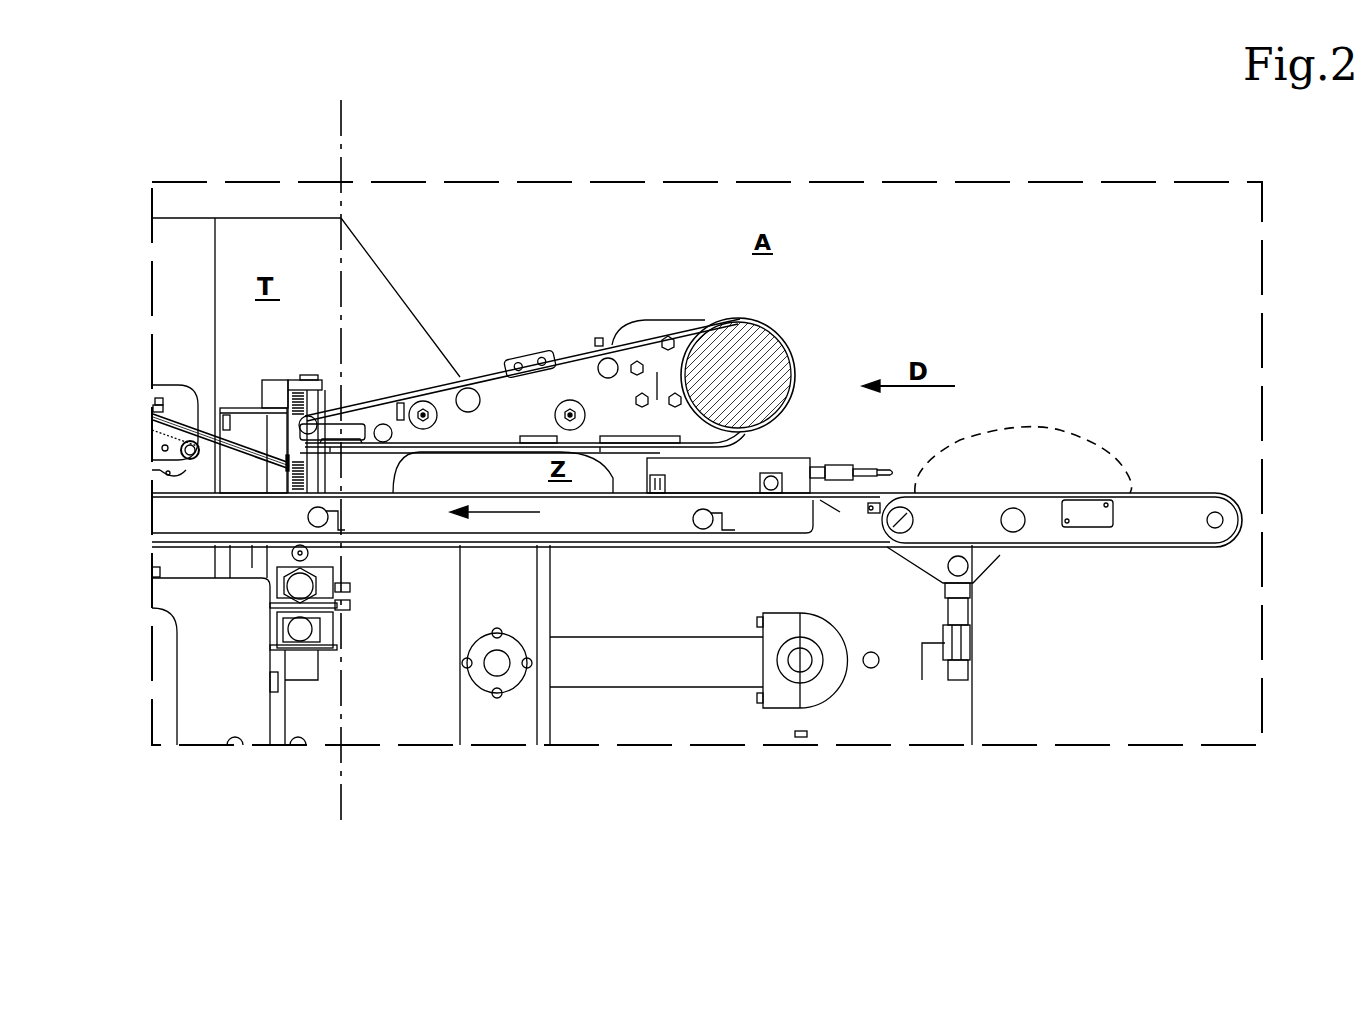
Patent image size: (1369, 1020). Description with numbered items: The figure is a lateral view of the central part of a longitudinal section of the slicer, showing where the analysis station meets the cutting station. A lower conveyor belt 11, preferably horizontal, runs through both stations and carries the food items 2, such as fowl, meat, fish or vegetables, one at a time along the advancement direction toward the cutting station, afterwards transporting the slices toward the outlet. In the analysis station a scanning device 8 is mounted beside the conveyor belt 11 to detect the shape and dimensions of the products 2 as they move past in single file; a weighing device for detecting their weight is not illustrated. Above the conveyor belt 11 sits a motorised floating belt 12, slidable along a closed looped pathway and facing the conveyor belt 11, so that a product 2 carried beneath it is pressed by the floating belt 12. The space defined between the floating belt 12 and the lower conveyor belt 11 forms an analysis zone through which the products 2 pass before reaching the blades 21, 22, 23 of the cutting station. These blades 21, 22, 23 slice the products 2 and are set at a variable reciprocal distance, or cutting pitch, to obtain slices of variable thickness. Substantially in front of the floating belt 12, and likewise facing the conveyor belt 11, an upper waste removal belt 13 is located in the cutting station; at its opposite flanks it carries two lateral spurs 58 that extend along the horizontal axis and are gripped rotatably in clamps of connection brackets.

The food item 2 is at (502, 470).
The scanning device 8 is at (787, 460).
The lower conveyor belt 11 is at (738, 492).
The floating belt 12 is at (575, 332).
The upper waste removal belt 13 is at (197, 440).
The blade 21 is at (318, 476).
The blade 22 is at (293, 434).
The blade 23 is at (293, 434).
The lateral spur 58 is at (185, 448).